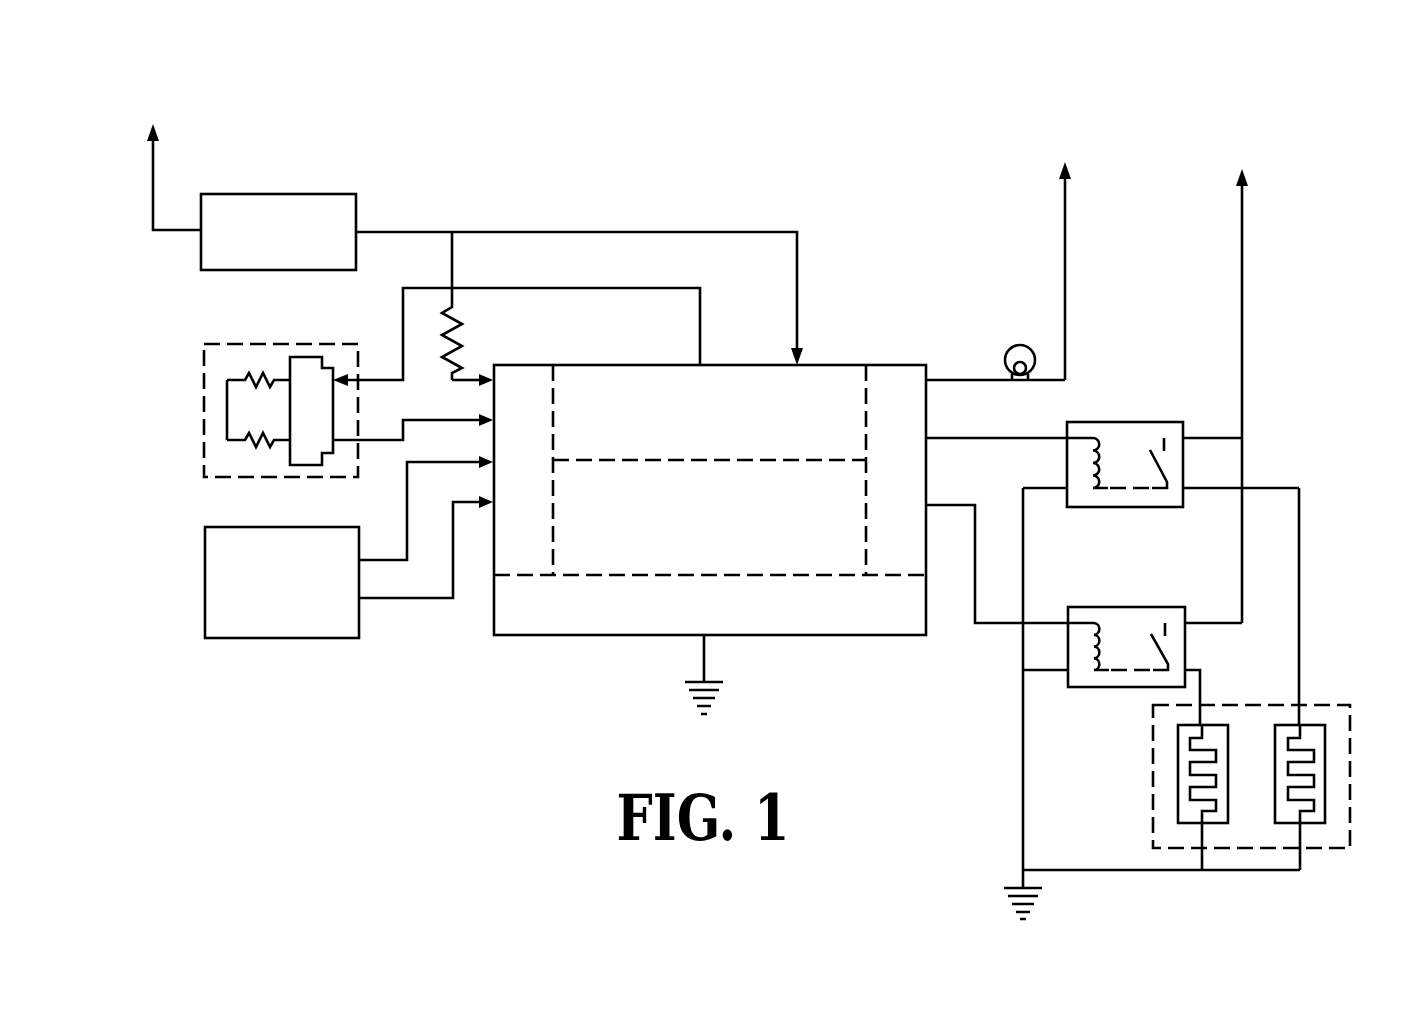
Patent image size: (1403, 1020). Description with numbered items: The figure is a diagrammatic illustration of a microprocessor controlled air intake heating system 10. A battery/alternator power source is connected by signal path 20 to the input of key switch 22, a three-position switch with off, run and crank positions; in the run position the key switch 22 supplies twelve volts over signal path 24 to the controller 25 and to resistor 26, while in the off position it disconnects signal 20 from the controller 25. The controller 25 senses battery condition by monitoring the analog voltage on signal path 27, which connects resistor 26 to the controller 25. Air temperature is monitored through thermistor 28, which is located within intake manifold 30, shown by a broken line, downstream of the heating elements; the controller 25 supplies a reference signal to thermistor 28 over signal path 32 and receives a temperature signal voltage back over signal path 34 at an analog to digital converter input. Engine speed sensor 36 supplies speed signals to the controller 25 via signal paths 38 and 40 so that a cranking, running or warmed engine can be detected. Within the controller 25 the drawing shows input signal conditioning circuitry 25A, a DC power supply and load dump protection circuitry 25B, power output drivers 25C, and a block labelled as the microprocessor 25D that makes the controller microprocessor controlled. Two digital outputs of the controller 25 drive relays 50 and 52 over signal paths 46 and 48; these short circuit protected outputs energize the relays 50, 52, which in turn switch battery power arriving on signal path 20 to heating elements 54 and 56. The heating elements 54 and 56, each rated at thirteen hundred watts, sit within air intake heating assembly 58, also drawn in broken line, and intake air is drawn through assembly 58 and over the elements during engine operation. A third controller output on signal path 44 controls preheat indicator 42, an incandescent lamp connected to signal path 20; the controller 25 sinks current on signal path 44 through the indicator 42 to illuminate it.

The air intake heating system 10 is at (596, 690).
The signal path 20 is at (155, 178).
The key switch 22 is at (357, 195).
The signal path 24 is at (610, 230).
The controller 25 is at (694, 504).
The input signal conditioning circuitry 25A is at (527, 365).
The DC power supply circuit and load dump protection circuitry 25B is at (677, 362).
The power output drivers 25C is at (903, 362).
The microprocessor 25D is at (732, 498).
The resistor 26 is at (458, 323).
The signal path 27 is at (467, 384).
The thermistor 28 is at (227, 415).
The intake manifold 30 is at (250, 388).
The signal path 32 is at (403, 320).
The signal path 34 is at (407, 429).
The engine speed sensor 36 is at (310, 640).
The signal path 38 is at (404, 515).
The signal path 40 is at (393, 598).
The preheat indicator 42 is at (1036, 352).
The signal path 44 is at (948, 378).
The signal path 46 is at (955, 440).
The signal path 48 is at (975, 607).
The relay 50 is at (1118, 422).
The relay 52 is at (1127, 607).
The heating element 54 is at (1223, 768).
The heating element 56 is at (1178, 759).
The air intake heating assembly 58 is at (1153, 810).